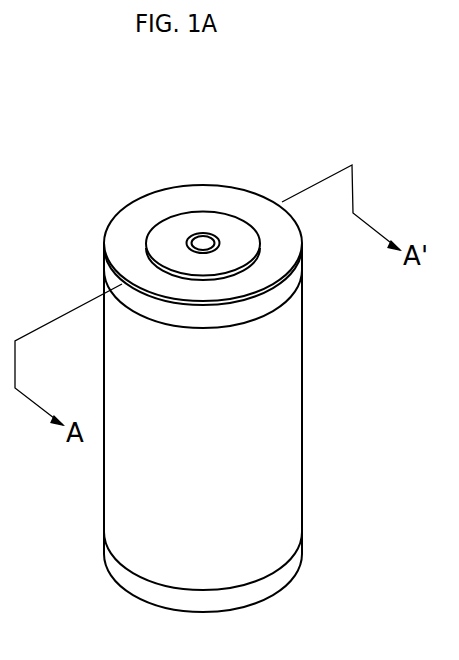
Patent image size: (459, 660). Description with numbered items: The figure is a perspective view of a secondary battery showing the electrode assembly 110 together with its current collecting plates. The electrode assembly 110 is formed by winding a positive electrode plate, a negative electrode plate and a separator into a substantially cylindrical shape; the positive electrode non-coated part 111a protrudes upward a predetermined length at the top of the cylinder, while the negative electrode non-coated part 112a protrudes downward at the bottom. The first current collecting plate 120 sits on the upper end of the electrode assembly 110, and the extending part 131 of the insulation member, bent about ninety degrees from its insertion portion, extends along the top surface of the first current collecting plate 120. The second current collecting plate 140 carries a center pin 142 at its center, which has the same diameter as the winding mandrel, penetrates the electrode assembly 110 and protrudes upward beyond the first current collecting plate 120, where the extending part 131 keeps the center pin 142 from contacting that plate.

The electrode assembly 110 is at (261, 427).
The positive electrode non-coated part 111a is at (275, 298).
The negative electrode non-coated part 112a is at (284, 582).
The first current collecting plate 120 is at (250, 202).
The extending part 131 is at (217, 217).
The second current collecting plate 140 is at (126, 187).
The center pin 142 is at (203, 242).